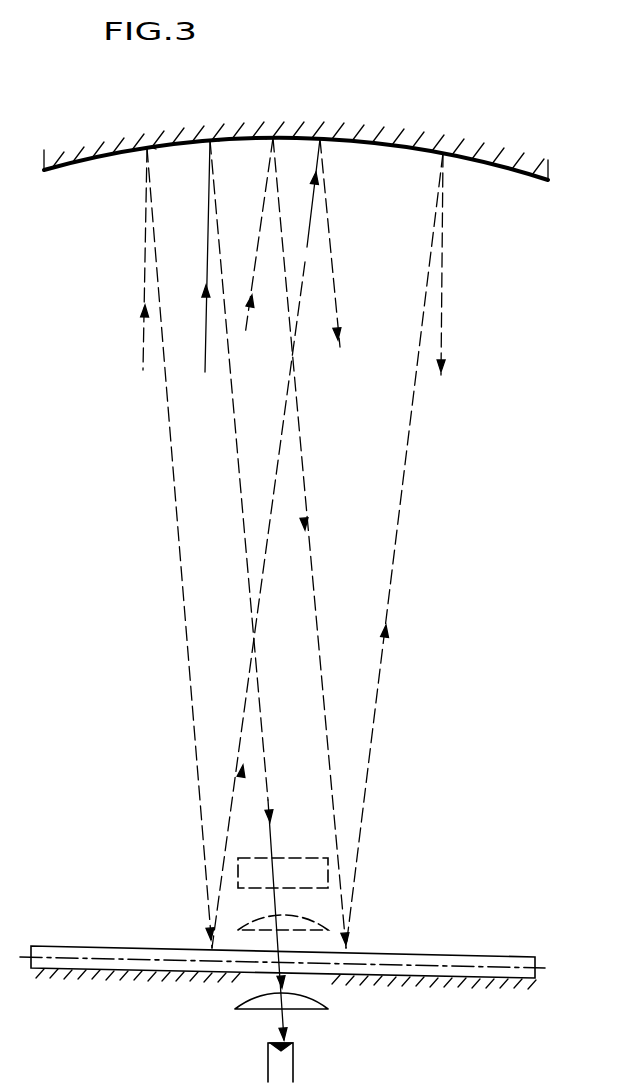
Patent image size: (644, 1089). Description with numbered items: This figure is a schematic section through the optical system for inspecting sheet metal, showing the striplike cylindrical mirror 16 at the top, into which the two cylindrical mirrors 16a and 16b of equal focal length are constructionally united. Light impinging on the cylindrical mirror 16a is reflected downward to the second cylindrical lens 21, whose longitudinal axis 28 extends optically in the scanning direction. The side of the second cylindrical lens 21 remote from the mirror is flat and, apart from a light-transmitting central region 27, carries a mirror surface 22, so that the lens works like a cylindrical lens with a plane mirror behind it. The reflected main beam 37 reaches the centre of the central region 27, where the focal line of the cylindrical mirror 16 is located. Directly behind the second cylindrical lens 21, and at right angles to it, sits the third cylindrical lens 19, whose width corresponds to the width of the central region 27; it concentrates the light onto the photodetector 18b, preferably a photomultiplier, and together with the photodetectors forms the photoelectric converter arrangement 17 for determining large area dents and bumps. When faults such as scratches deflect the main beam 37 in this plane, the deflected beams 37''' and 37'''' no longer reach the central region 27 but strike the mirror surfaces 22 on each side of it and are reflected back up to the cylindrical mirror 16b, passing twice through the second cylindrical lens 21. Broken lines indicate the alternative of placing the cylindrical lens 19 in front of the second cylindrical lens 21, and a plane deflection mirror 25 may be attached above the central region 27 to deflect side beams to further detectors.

The striplike cylindrical mirror 16 is at (382, 111).
The cylindrical mirror 16a is at (165, 156).
The cylindrical mirror 16b is at (443, 155).
The main beam 37 is at (293, 589).
The deflected light beam 37''' is at (211, 543).
The deflected light beam 37'''' is at (321, 543).
The plane deflection mirror 25 is at (306, 858).
The third cylindrical lens 19 is at (310, 918).
The central region 27 is at (246, 981).
The photodetector 18b is at (270, 1068).
The photoelectric converter arrangement 17 is at (339, 997).
The second cylindrical lens 21 is at (413, 957).
The mirror surface 22 is at (88, 976).
The longitudinal axis 28 is at (545, 967).